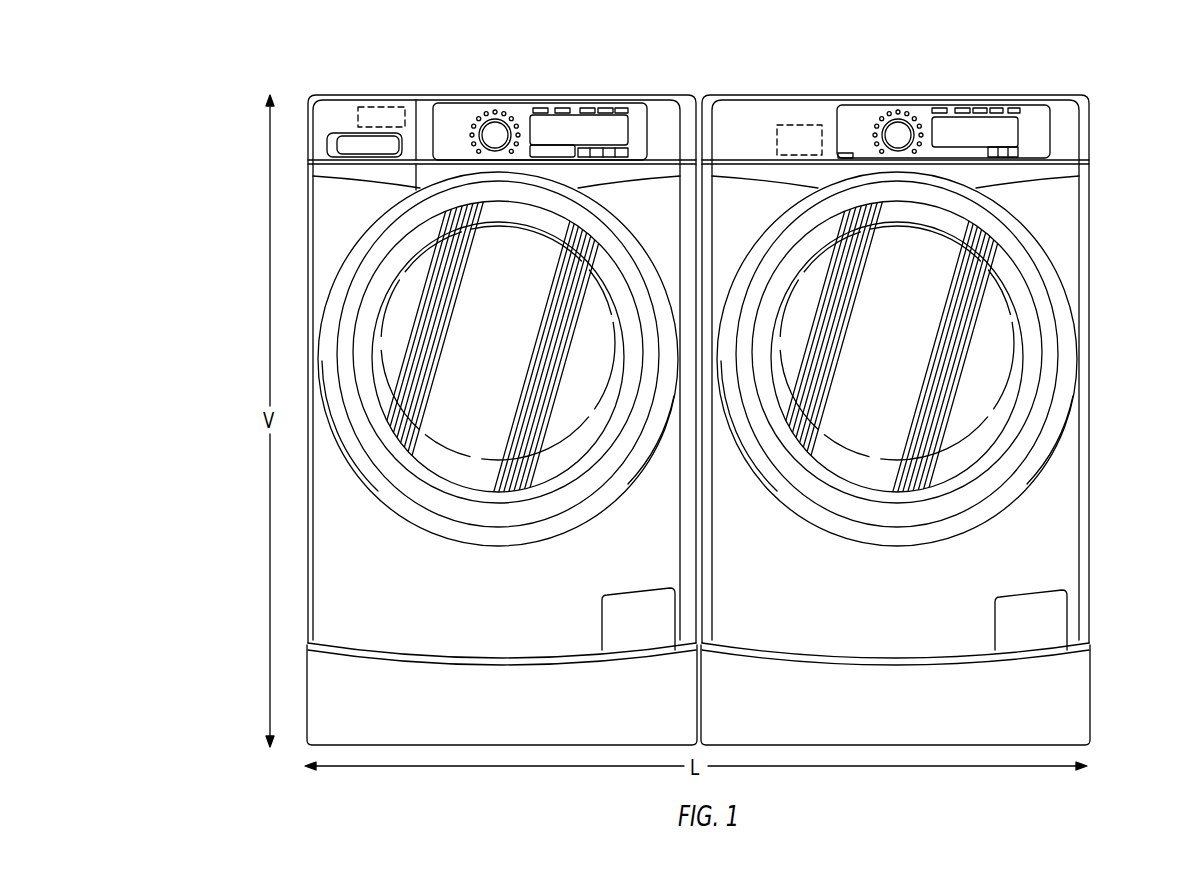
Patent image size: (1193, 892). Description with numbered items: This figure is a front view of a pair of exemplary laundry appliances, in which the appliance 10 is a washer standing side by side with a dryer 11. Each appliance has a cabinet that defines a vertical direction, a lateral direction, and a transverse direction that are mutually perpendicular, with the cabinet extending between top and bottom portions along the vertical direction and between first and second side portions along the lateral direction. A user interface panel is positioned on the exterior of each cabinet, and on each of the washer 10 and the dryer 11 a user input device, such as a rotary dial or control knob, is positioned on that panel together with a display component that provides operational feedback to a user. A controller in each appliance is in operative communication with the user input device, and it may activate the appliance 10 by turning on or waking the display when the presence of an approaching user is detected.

The appliance 10 is at (245, 107).
The dryer 11 is at (1130, 130).